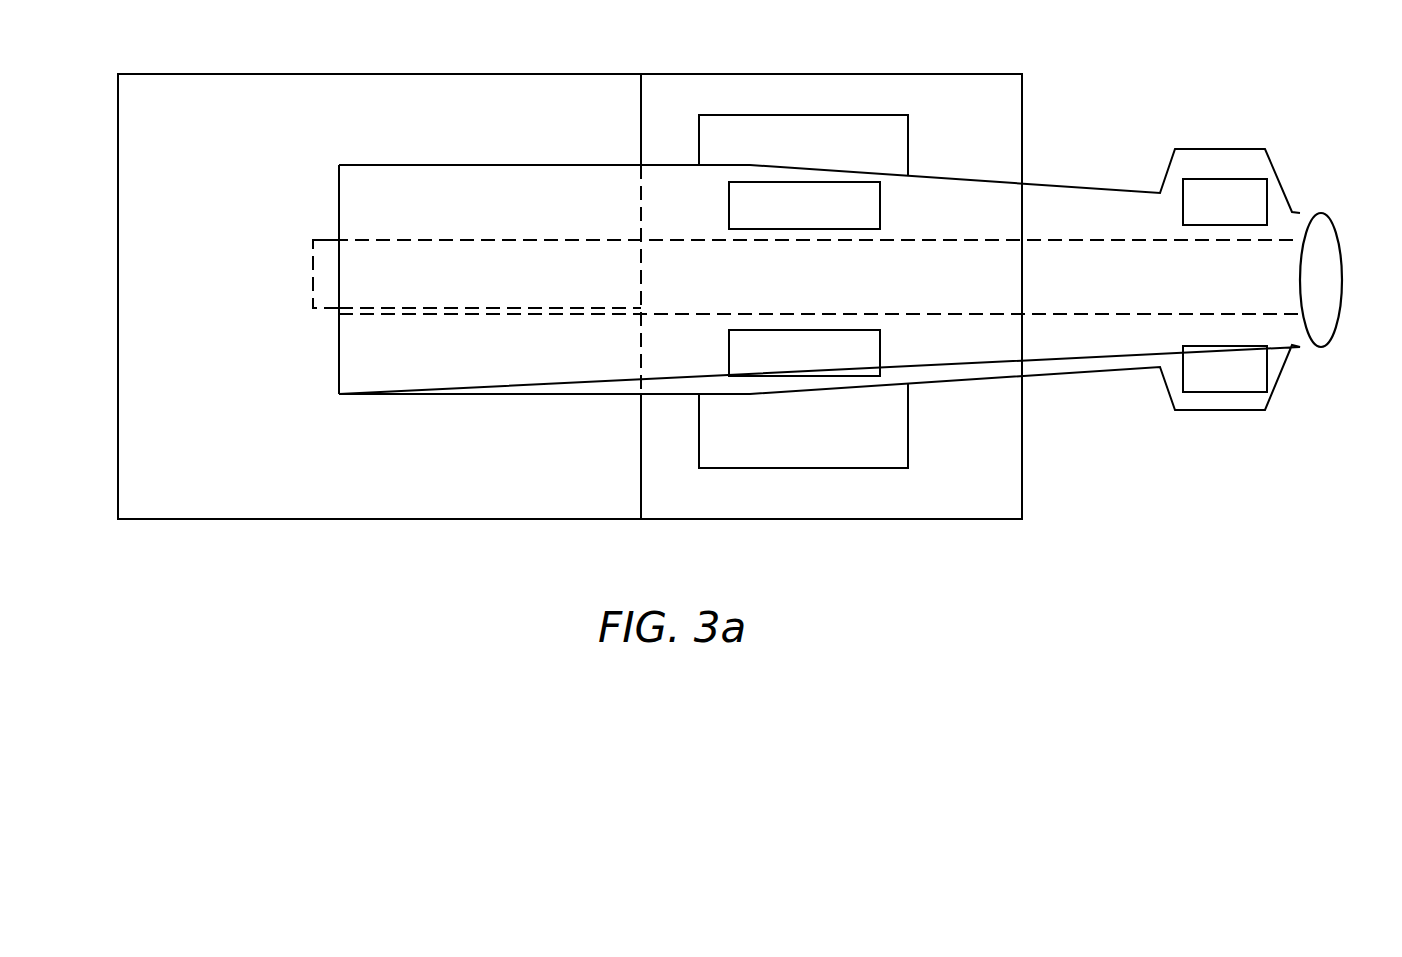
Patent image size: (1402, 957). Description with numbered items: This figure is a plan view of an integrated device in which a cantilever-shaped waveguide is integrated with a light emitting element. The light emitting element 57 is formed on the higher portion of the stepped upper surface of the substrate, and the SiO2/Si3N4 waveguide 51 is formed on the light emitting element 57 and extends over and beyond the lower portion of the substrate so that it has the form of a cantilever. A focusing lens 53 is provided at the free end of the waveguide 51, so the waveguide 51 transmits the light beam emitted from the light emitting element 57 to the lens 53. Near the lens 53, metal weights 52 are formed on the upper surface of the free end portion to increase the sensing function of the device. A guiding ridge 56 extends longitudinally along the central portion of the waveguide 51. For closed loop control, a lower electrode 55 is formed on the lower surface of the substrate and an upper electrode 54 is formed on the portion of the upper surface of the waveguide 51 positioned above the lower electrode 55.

The waveguide 51 is at (465, 178).
The metal weights 52 is at (1232, 190).
The focusing lens 53 is at (1325, 322).
The upper electrode 54 is at (875, 200).
The lower electrode 55 is at (765, 456).
The guiding ridge 56 is at (698, 303).
The light emitting element 57 is at (318, 298).